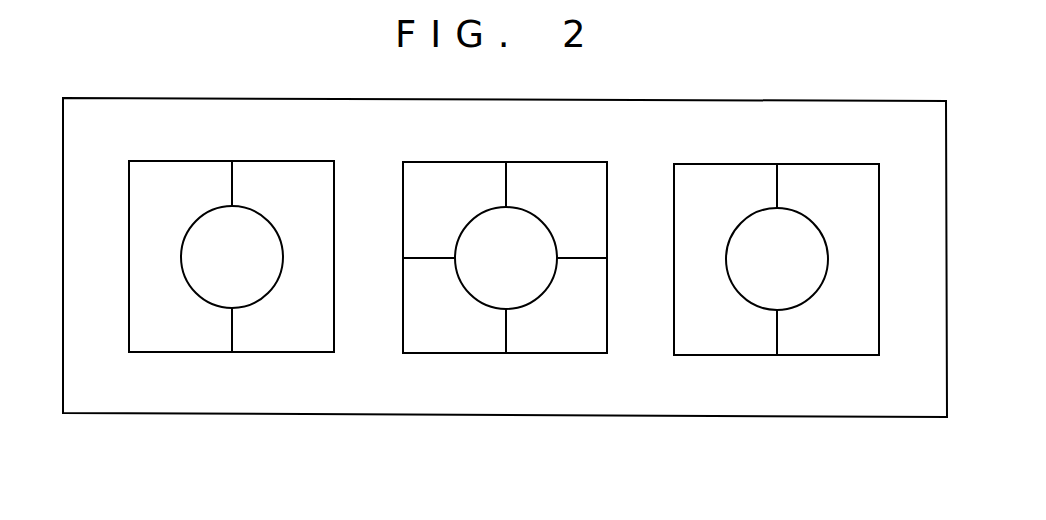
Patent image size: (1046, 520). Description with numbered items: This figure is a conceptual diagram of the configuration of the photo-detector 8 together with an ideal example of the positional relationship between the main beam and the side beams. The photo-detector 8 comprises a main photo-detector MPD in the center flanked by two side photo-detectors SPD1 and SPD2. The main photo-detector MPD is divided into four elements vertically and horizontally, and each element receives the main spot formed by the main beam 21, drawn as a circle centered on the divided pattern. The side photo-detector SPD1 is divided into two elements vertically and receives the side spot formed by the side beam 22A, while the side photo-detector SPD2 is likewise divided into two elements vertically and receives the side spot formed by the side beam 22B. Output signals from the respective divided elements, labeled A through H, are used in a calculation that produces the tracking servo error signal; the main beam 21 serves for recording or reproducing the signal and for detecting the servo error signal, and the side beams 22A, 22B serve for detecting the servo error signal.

The photo-detector 8 is at (753, 100).
The main beam 21 is at (467, 296).
The side beam 22A is at (747, 302).
The side beam 22B is at (202, 300).
The main photo-detector MPD is at (593, 353).
The side photo-detector SPD1 is at (830, 355).
The side photo-detector SPD2 is at (283, 352).